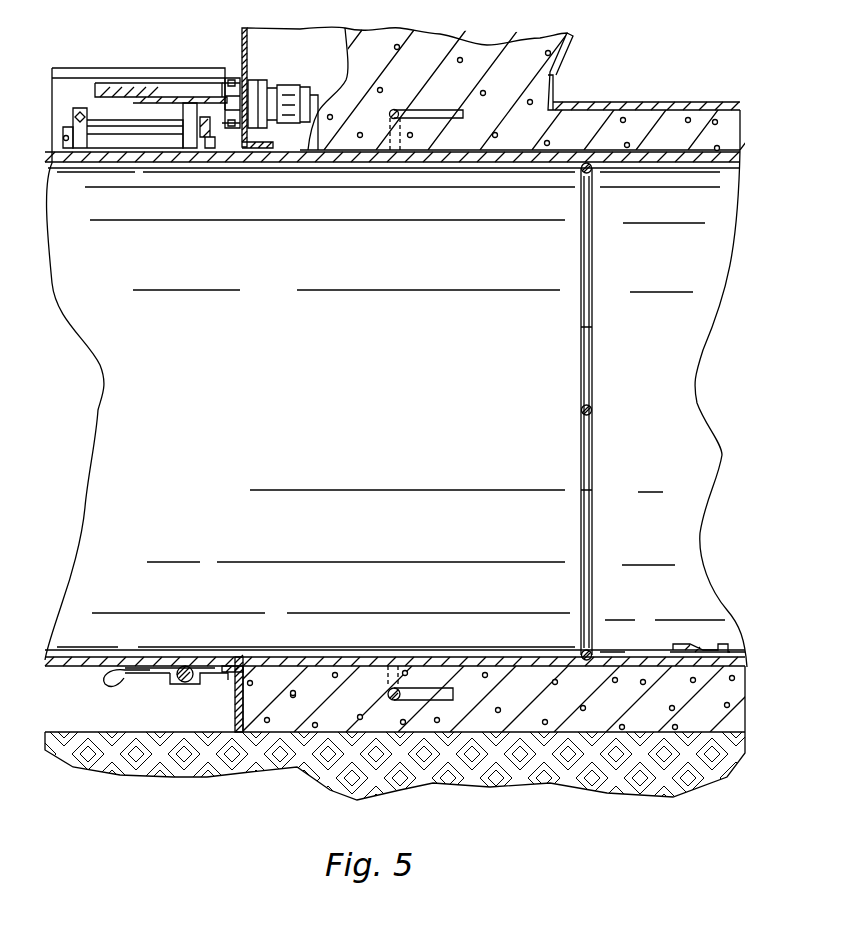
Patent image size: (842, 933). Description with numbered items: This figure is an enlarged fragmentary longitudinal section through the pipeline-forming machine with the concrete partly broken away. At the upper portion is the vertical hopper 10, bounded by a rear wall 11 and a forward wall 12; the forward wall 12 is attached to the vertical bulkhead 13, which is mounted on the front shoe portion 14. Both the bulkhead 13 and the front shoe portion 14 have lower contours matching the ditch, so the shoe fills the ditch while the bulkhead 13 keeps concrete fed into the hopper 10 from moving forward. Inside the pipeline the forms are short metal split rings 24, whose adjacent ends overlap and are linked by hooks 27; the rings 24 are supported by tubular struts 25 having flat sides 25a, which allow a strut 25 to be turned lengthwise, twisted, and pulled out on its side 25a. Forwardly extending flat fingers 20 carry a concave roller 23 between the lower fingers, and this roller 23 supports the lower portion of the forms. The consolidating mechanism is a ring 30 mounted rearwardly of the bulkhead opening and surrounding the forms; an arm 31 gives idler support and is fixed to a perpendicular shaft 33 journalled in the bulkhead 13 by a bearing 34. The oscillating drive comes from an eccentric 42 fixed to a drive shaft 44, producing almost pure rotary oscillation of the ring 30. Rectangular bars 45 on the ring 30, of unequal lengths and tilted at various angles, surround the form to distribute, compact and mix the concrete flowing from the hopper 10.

The vertical hopper 10 is at (431, 25).
The rear wall 11 is at (554, 92).
The forward wall 12 is at (243, 40).
The vertical bulkhead 13 is at (246, 74).
The front shoe portion 14 is at (92, 728).
The flat fingers 20 is at (120, 682).
The concave roller 23 is at (178, 683).
The split rings 24 is at (432, 170).
The struts 25 is at (593, 530).
The flat sides 25a is at (593, 348).
The hooks 27 is at (678, 646).
The ring 30 is at (392, 662).
The arm 31 is at (318, 97).
The perpendicular shaft 33 is at (286, 86).
The bearing 34 is at (243, 78).
The eccentric 42 is at (183, 113).
The drive shaft 44 is at (124, 136).
The rectangular blades or bars 45 is at (420, 688).